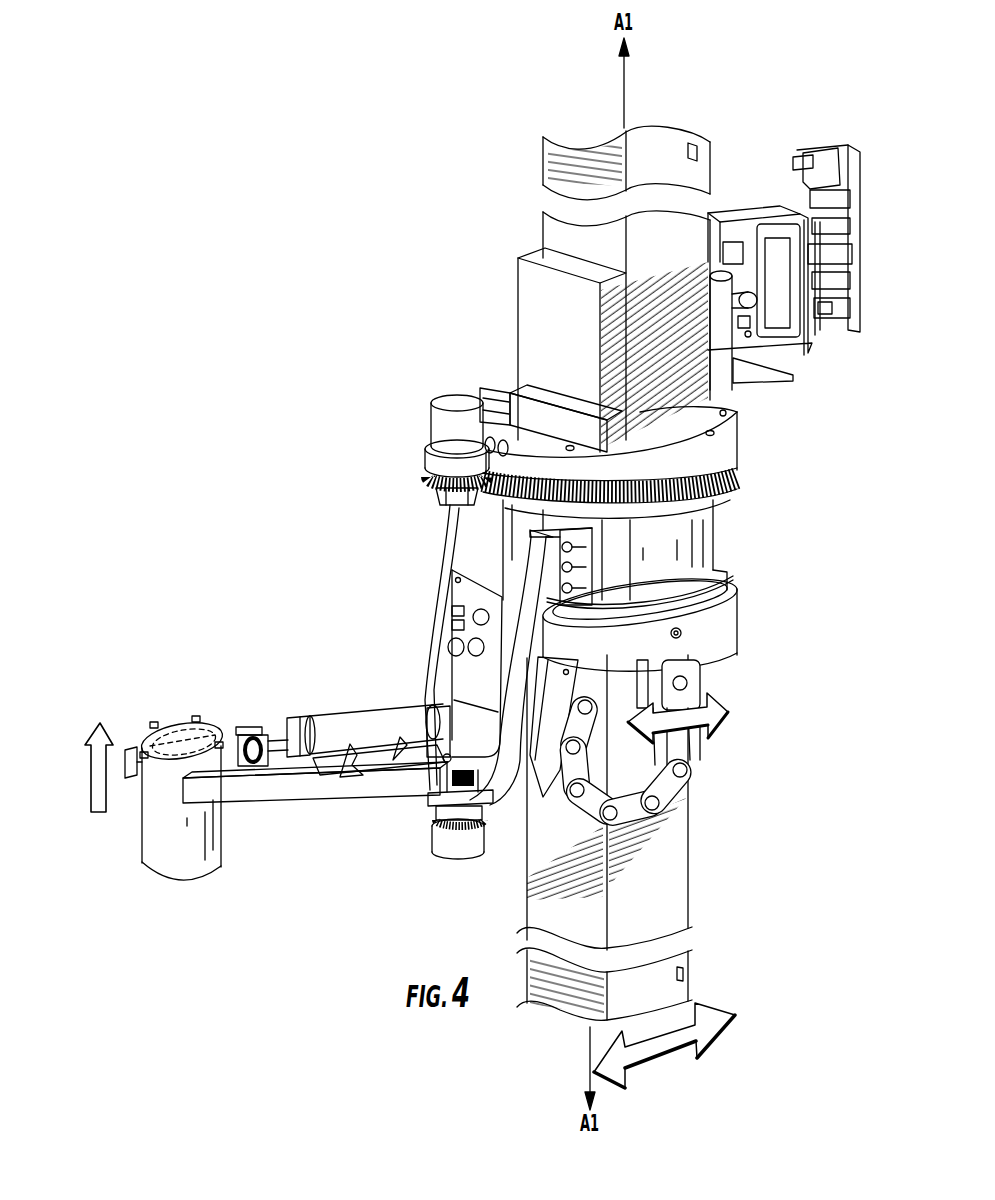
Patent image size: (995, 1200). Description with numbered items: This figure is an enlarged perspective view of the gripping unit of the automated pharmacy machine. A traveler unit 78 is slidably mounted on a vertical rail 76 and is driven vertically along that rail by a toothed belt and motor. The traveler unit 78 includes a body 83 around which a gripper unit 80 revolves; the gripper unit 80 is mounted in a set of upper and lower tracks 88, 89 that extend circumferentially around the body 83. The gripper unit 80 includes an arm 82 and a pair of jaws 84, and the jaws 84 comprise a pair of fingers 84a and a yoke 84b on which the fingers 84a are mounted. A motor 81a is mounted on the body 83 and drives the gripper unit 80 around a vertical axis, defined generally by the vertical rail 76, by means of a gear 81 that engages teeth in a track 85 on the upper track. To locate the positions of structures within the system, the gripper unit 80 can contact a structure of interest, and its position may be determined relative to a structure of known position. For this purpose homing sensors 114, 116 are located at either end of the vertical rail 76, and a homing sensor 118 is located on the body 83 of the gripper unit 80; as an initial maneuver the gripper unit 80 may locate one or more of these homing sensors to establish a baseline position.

The vertical rail 76 is at (685, 280).
The homing sensor 114 is at (697, 153).
The homing sensor 116 is at (684, 972).
The homing sensor 118 is at (720, 410).
The traveler unit 78 is at (656, 528).
The upper track 88 is at (730, 446).
The track 85 is at (733, 468).
The body 83 is at (706, 537).
The lower track 89 is at (725, 613).
The gear 81 is at (432, 474).
The motor 81a is at (457, 412).
The gripper unit 80 is at (368, 740).
The arm 82 is at (350, 731).
The jaws 84 is at (150, 760).
The fingers 84a is at (133, 760).
The yoke 84b is at (268, 802).